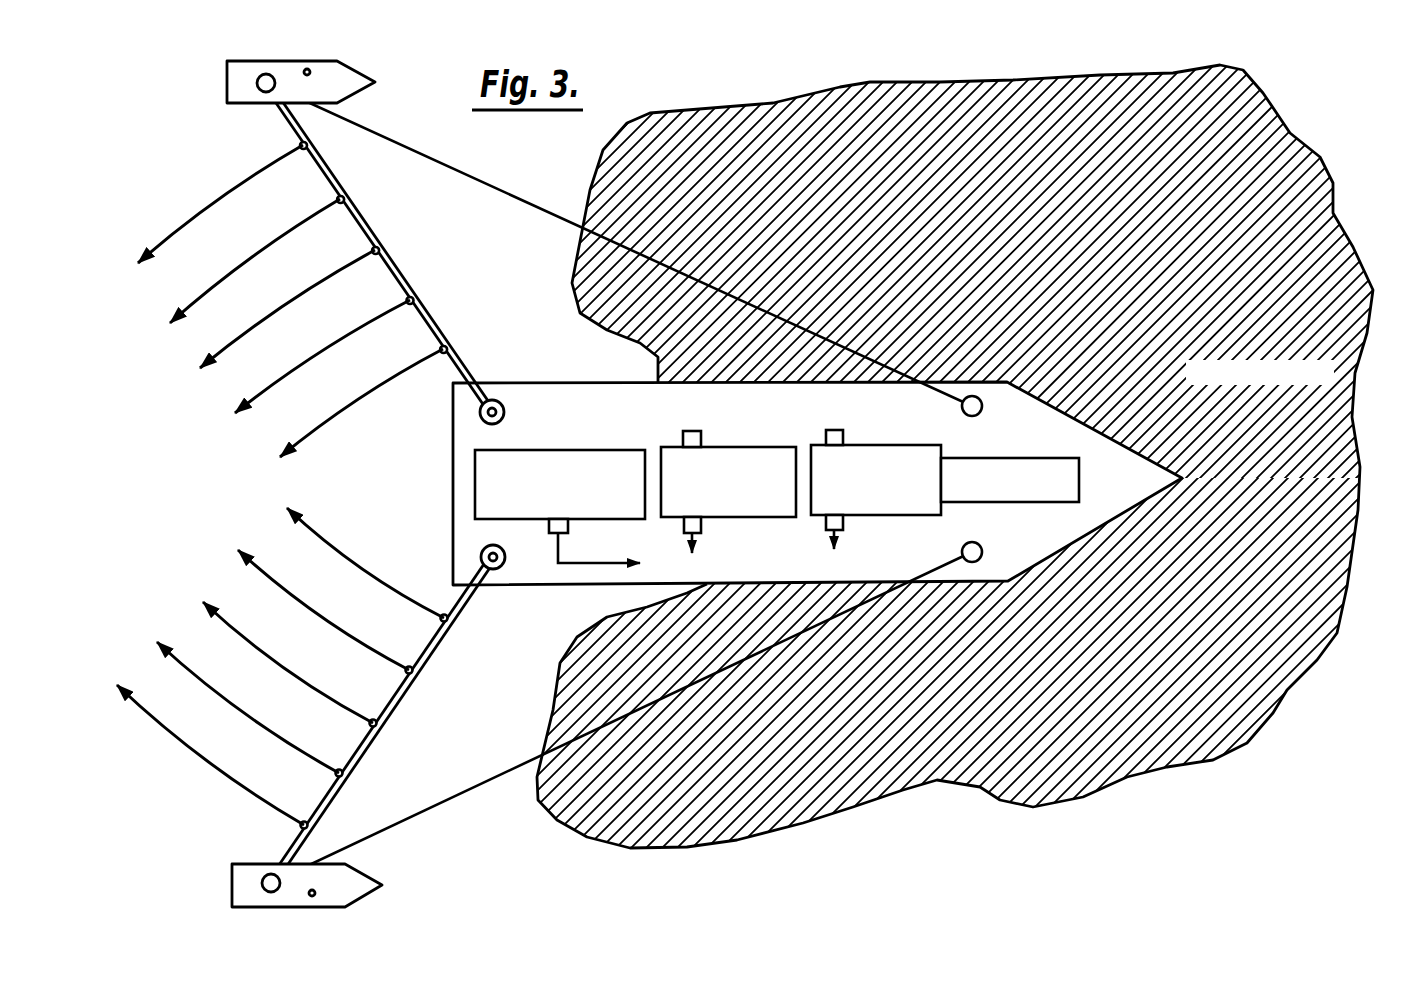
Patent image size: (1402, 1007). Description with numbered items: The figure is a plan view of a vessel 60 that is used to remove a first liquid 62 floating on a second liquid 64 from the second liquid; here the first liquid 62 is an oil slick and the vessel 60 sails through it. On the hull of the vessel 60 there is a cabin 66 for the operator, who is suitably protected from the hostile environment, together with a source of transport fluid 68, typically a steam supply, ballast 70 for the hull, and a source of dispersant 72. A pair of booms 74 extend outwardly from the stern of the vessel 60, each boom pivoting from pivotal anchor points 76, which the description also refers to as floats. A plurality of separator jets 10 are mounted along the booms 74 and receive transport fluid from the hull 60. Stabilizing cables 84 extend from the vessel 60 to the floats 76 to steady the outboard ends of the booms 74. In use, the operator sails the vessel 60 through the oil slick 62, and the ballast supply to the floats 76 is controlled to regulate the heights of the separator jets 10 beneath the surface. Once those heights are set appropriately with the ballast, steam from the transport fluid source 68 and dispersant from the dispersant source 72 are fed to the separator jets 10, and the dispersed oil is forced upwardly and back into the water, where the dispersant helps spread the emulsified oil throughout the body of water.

The separator jets 10 is at (358, 245).
The vessel 60 is at (453, 424).
The first liquid 62 is at (1283, 222).
The second liquid 64 is at (543, 339).
The cabin 66 is at (1000, 458).
The source of transport fluid 68 is at (745, 447).
The ballast 70 is at (888, 452).
The source of dispersant 72 is at (585, 450).
The booms 74 is at (364, 205).
The pivotal anchor points 76 is at (237, 84).
The stabilizing cables 84 is at (533, 200).